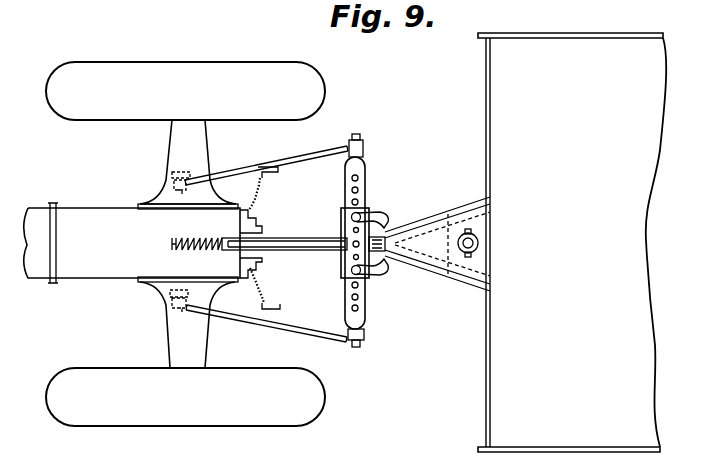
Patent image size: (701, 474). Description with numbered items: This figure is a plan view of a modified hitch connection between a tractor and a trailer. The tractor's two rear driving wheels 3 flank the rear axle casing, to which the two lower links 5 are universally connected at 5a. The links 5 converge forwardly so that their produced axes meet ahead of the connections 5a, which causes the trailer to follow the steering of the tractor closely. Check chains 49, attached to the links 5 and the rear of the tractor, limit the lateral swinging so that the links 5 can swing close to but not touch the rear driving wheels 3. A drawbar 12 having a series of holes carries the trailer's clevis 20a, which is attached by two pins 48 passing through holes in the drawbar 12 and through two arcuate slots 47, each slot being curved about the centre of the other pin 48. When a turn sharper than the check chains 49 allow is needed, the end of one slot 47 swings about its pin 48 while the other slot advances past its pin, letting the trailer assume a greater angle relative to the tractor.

The rear driving wheels 3 is at (185, 244).
The lower links 5 is at (293, 153).
The universal connections 5a is at (188, 182).
The check chains 49 is at (265, 200).
The drawbar 12 is at (361, 173).
The pins 48 is at (362, 213).
The arcuate slots 47 is at (388, 220).
The clevis 20a is at (389, 261).